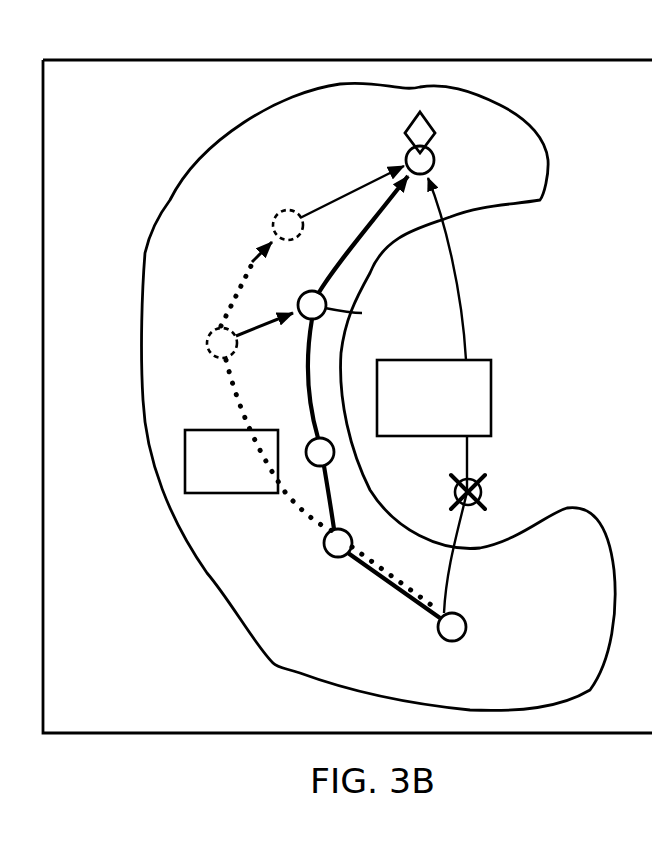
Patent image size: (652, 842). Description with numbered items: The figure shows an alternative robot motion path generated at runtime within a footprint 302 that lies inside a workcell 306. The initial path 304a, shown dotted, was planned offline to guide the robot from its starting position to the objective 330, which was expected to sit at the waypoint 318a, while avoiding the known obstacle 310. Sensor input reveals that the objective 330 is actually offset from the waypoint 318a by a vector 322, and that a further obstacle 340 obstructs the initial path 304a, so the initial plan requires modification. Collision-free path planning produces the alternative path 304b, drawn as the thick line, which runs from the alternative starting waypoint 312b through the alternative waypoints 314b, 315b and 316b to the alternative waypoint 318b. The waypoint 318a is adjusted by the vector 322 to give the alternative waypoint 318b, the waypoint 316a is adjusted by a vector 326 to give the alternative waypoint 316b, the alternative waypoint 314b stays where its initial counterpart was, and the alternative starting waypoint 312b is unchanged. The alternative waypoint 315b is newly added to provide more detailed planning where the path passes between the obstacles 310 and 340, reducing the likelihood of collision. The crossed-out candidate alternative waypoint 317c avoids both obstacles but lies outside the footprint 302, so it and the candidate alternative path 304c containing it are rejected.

The workcell 306 is at (143, 60).
The footprint 302 is at (145, 253).
The vector 322 is at (346, 171).
The initial path 304a is at (278, 510).
The alternative path 304b is at (306, 386).
The candidate alternative path 304c is at (466, 320).
The objective 330 is at (437, 126).
The alternative waypoint 318b is at (434, 162).
The waypoint 318a is at (278, 218).
The vector 326 is at (282, 305).
The waypoint 316a is at (215, 333).
The alternative waypoint 316b is at (362, 313).
The obstacle 310 is at (434, 398).
The obstacle 340 is at (231, 461).
The candidate alternative waypoint 317c is at (490, 488).
The alternative waypoint 315b is at (327, 465).
The alternative waypoint 314b is at (333, 556).
The alternative starting waypoint 312b is at (458, 614).